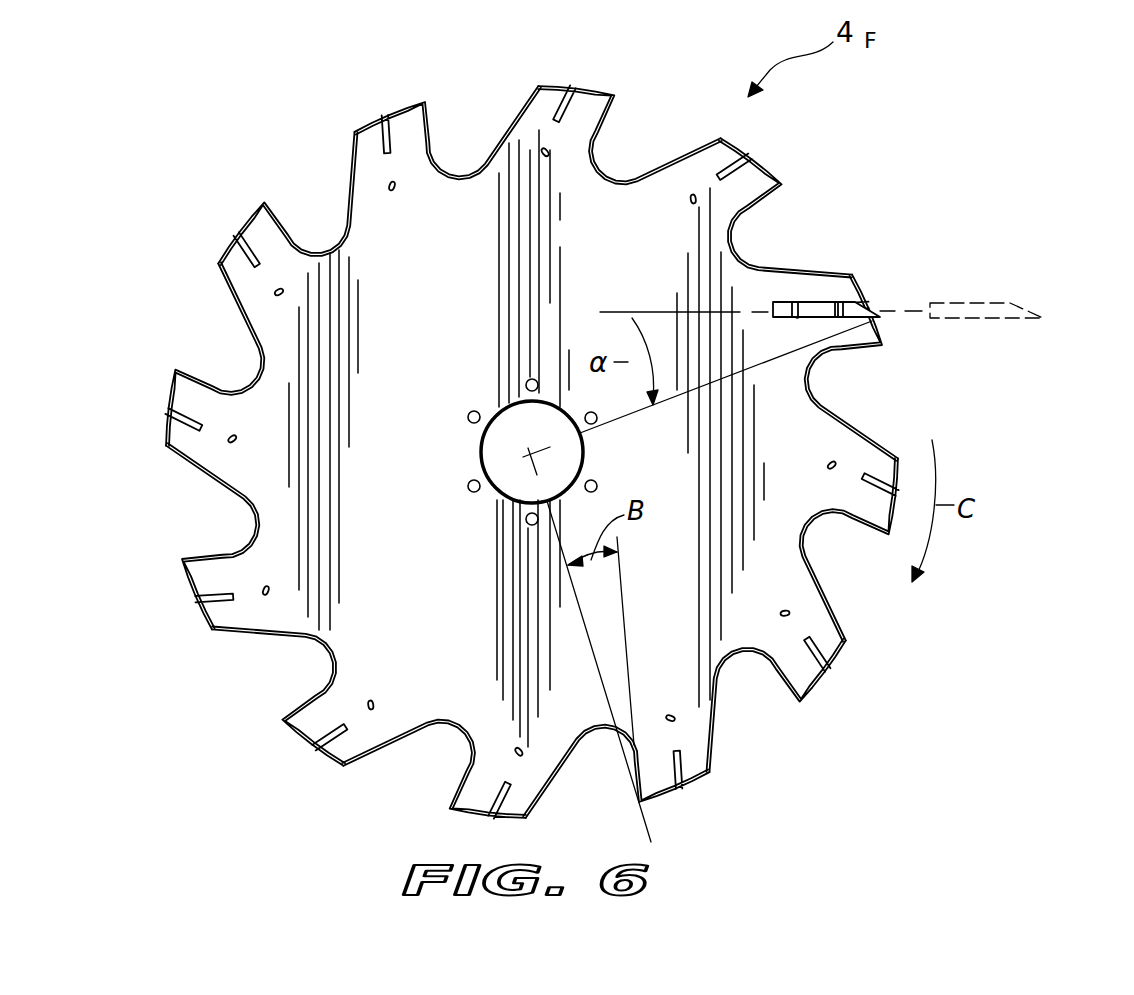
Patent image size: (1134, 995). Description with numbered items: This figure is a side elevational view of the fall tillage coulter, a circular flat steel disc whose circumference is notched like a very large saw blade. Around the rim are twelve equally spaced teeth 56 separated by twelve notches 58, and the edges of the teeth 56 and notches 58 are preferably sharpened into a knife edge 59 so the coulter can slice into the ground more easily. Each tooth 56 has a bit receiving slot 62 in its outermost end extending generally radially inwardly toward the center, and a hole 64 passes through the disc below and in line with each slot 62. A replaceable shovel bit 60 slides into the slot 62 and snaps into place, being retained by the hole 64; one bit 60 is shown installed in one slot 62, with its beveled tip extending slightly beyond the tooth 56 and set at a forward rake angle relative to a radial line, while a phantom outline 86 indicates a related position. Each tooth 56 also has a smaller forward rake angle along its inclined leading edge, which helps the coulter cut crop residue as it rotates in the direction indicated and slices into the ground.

The tooth 56 is at (259, 202).
The notch 58 is at (456, 166).
The knife edge 59 is at (183, 393).
The shovel bit 60 is at (808, 300).
The bit receiving slot 62 is at (753, 170).
The hole 64 is at (393, 190).
The insert position (phantom) 86 is at (1050, 304).